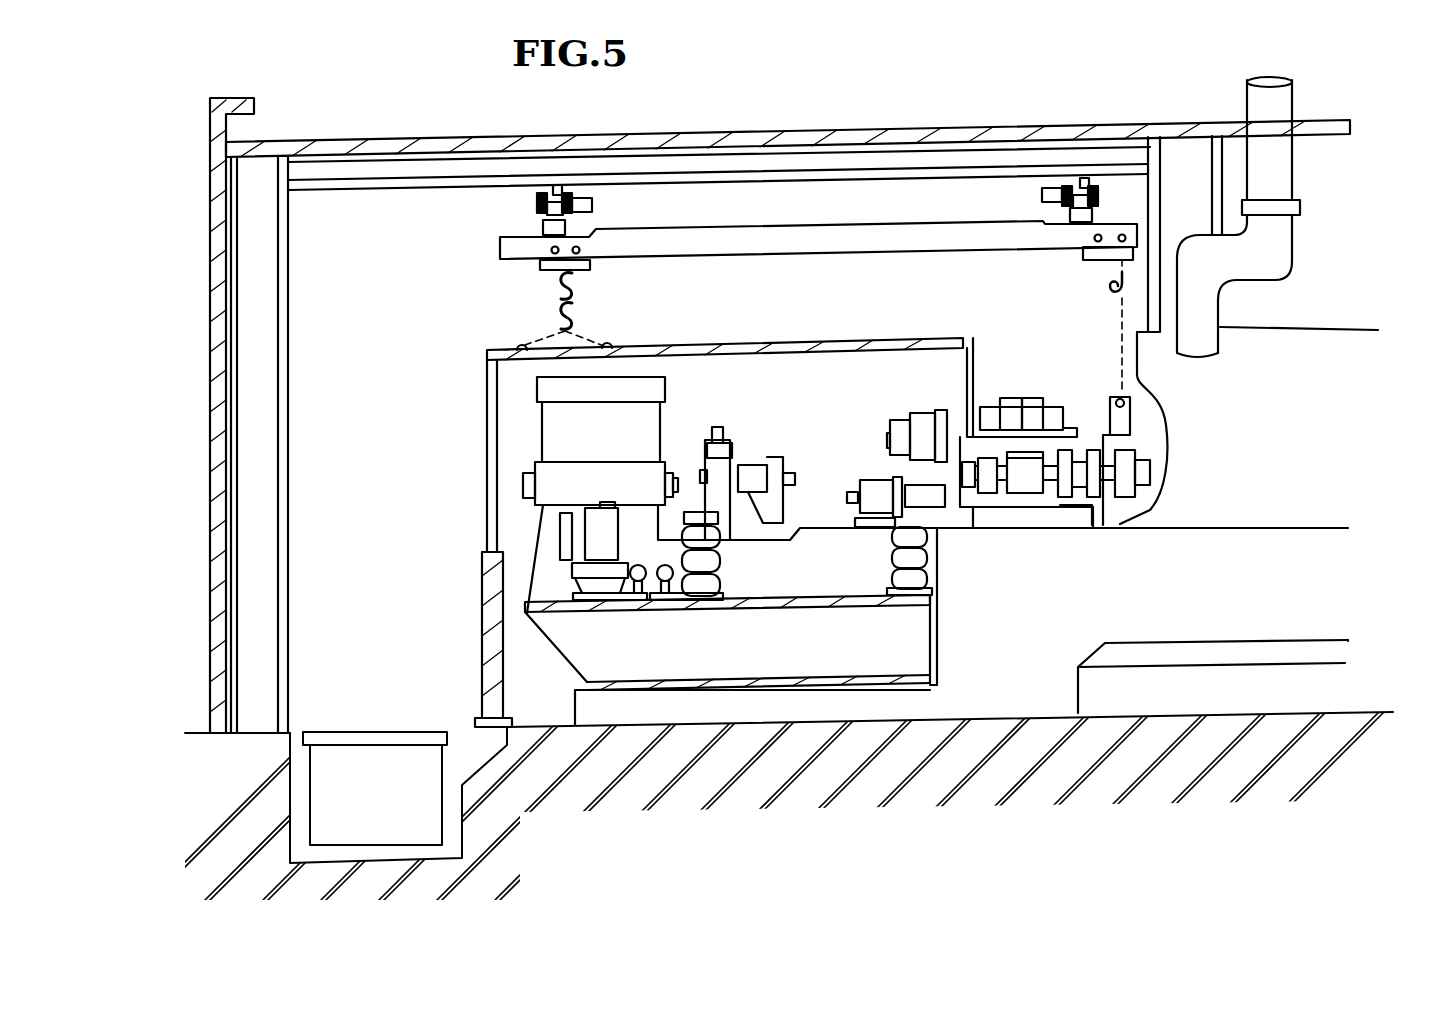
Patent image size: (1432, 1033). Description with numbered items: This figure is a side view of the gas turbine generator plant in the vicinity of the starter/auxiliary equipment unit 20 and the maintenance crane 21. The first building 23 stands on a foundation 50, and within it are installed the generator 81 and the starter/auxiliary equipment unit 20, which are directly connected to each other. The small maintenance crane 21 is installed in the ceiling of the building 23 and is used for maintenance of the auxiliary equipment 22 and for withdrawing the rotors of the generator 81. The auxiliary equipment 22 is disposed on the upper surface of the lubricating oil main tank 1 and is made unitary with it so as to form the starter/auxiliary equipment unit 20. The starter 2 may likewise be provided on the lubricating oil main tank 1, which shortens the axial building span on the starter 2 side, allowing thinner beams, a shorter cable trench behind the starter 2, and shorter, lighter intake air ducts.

The lubricating oil main tank 1 is at (944, 636).
The starter 2 is at (928, 417).
The starter/auxiliary equipment unit 20 is at (658, 343).
The maintenance crane 21 is at (698, 237).
The auxiliary equipment 22 is at (693, 503).
The first building 23 is at (724, 133).
The foundation 50 is at (937, 770).
The generator 81 is at (1243, 350).